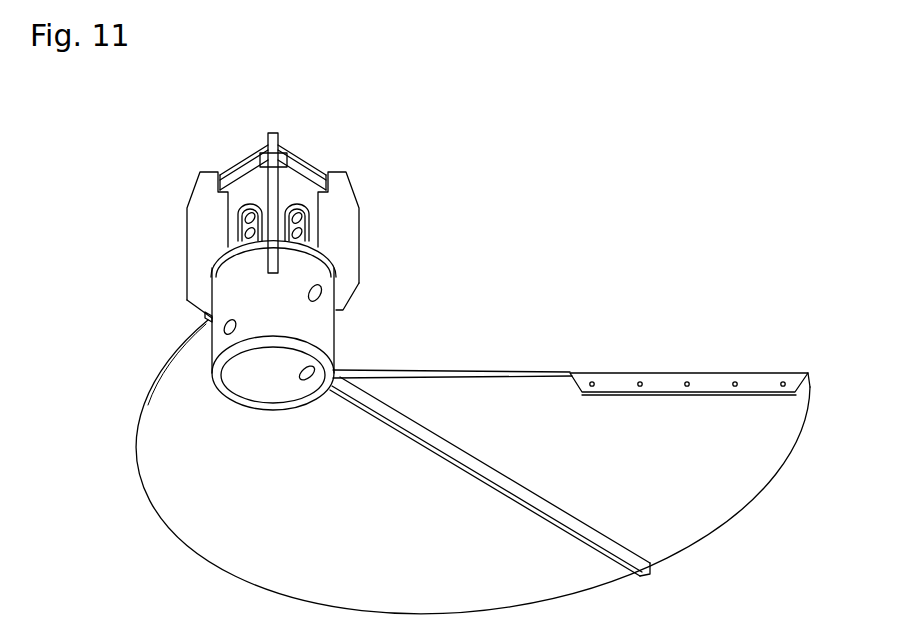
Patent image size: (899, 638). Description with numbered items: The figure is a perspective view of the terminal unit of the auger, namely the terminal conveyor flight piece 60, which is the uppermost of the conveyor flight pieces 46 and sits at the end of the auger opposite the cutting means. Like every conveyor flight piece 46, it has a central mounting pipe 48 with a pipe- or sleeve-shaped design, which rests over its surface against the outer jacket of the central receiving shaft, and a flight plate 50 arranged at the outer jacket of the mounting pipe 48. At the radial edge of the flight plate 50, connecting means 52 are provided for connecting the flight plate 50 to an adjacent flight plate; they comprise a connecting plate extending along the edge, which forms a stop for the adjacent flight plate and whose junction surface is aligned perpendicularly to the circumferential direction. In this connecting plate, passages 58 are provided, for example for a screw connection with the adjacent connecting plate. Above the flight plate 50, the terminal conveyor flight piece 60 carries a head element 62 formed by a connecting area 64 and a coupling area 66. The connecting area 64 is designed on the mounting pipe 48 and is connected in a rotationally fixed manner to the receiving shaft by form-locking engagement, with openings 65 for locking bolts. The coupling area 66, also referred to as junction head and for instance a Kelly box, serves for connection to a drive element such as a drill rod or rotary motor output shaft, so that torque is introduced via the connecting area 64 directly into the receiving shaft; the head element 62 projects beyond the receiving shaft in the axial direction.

The conveyor flight piece 46 is at (237, 110).
The central mounting pipe 48 is at (320, 326).
The flight plate 50 is at (567, 470).
The connecting means 52 is at (612, 377).
The passages 58 is at (737, 381).
The terminal conveyor flight piece 60 is at (173, 127).
The head element 62 is at (366, 225).
The connecting area 64 is at (222, 284).
The openings 65 is at (205, 317).
The coupling area 66 is at (237, 208).